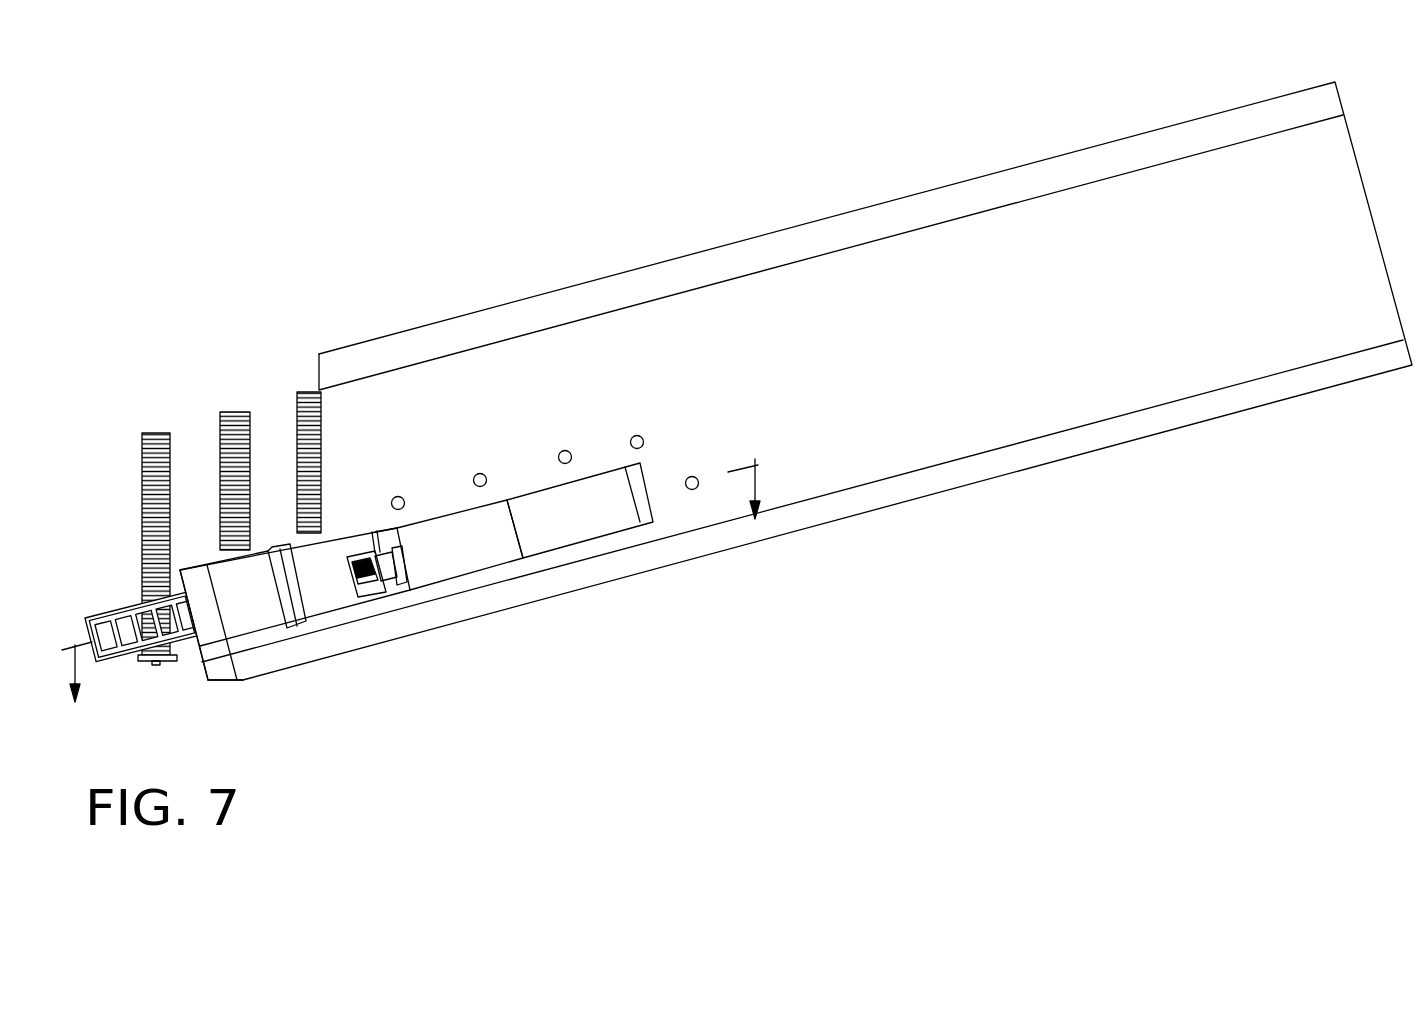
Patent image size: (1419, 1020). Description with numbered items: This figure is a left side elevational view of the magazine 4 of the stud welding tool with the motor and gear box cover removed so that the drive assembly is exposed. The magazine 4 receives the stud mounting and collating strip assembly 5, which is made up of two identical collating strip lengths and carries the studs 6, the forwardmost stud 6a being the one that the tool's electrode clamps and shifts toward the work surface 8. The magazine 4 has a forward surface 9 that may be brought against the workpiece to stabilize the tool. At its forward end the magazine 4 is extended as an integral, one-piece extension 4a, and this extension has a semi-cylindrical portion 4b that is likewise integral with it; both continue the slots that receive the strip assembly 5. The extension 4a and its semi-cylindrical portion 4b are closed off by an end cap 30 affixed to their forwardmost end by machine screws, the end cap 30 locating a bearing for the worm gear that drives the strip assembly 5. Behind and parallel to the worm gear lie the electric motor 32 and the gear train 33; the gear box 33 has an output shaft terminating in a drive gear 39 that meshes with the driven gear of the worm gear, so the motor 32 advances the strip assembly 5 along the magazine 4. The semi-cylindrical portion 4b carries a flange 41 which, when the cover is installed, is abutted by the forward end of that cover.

The magazine 4 is at (928, 377).
The extension 4a is at (220, 558).
The semi-cylindrical portion 4b is at (262, 613).
The stud mounting and collating strip assembly 5 is at (118, 598).
The stud 6 is at (232, 412).
The forwardmost stud 6a is at (153, 433).
The work surface 8 is at (427, 584).
The forward surface 9 is at (222, 682).
The end cap 30 is at (207, 636).
The electric motor 32 is at (552, 533).
The gear train 33 is at (466, 553).
The drive gear 39 is at (370, 580).
The flange 41 is at (303, 630).